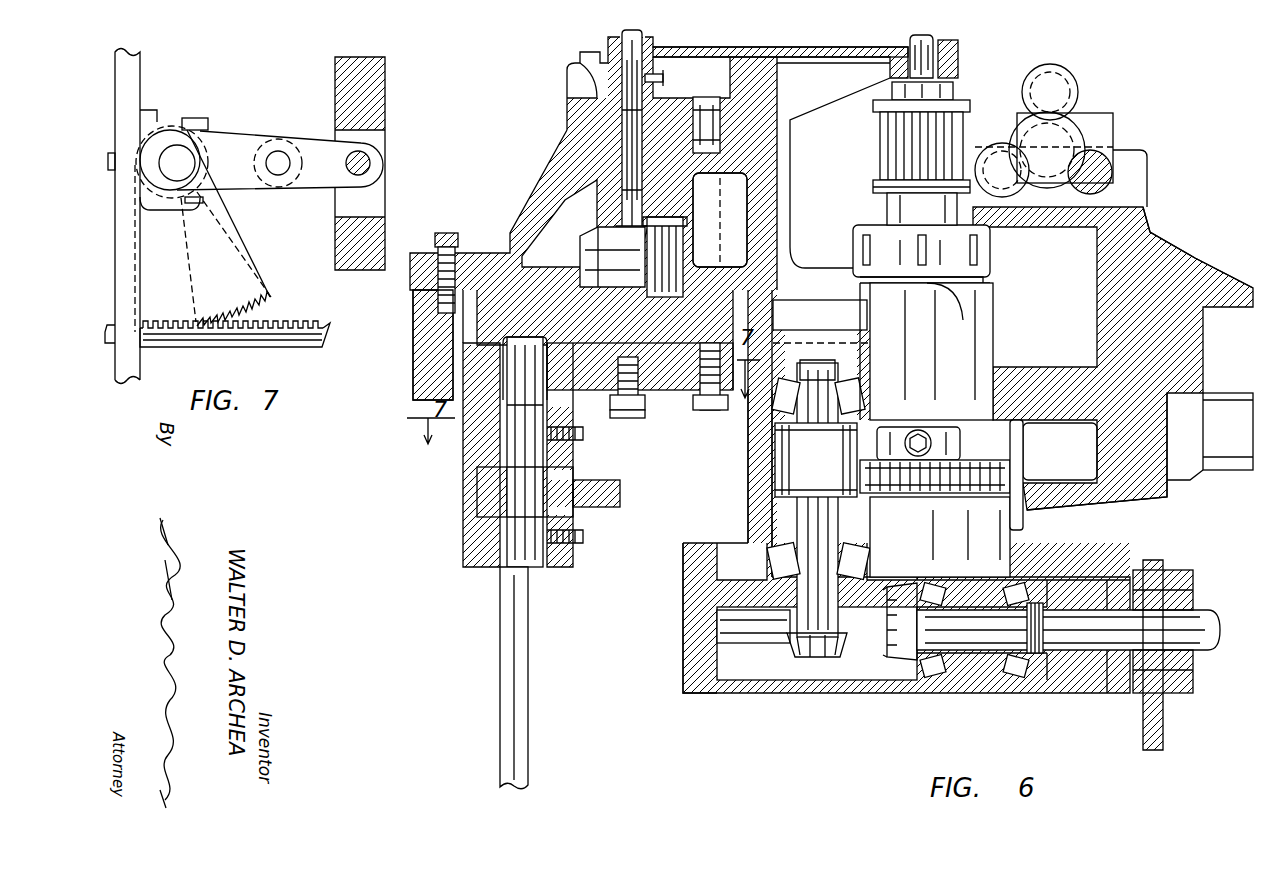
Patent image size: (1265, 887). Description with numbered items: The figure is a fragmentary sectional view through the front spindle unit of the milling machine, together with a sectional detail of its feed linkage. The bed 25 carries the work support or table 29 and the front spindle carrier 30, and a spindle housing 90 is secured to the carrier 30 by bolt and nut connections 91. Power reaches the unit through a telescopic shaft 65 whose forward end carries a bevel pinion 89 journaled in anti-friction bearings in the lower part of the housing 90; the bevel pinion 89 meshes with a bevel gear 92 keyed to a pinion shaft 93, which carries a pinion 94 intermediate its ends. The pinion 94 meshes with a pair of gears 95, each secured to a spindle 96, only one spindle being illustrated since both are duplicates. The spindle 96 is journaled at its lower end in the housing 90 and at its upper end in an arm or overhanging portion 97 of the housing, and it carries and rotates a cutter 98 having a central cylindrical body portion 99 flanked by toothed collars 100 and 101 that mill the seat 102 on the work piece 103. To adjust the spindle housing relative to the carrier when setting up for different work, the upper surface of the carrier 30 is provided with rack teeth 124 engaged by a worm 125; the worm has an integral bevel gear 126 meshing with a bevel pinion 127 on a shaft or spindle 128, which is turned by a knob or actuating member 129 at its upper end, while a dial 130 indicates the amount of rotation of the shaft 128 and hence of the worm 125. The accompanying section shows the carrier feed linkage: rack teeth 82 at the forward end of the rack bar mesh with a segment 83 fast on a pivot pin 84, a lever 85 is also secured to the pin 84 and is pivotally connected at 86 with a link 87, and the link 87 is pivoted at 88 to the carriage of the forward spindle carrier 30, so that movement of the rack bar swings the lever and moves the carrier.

In FIG. 6, the bed 25 is at (1140, 477).
In FIG. 6, the work support or table 29 is at (1137, 247).
In FIG. 6, the front spindle carrier 30 is at (425, 355).
In FIG. 6, the telescopic shaft 65 is at (1187, 627).
In FIG. 7, the rack teeth 82 is at (287, 321).
In FIG. 7, the segment 83 is at (262, 288).
In FIG. 6, the segment 83 is at (606, 492).
In FIG. 7, the pivot pin 84 is at (172, 150).
In FIG. 6, the pivot pin 84 is at (530, 573).
In FIG. 7, the lever 85 is at (270, 124).
In FIG. 6, the lever 85 is at (580, 397).
In FIG. 7, the pivotal connection 86 is at (282, 155).
In FIG. 6, the pivotal connection 86 is at (647, 397).
In FIG. 7, the link 87 is at (315, 145).
In FIG. 6, the link 87 is at (672, 390).
In FIG. 7, the pivot 88 is at (370, 165).
In FIG. 6, the pivot 88 is at (715, 408).
In FIG. 6, the bevel pinion 89 is at (905, 645).
In FIG. 6, the spindle housing 90 is at (747, 516).
In FIG. 6, the bolt and nut connections 91 is at (448, 235).
In FIG. 6, the bevel gear 92 is at (683, 578).
In FIG. 6, the pinion shaft 93 is at (813, 625).
In FIG. 6, the pinion 94 is at (847, 487).
In FIG. 6, the gears 95 is at (993, 477).
In FIG. 6, the spindle 96 is at (930, 35).
In FIG. 6, the arm or overhanging portion 97 is at (835, 47).
In FIG. 6, the cutter 98 is at (903, 133).
In FIG. 6, the central cylindrical body portion 99 is at (957, 138).
In FIG. 6, the collar 100 is at (960, 104).
In FIG. 6, the collar 101 is at (873, 183).
In FIG. 6, the seat 102 is at (1050, 108).
In FIG. 6, the work piece 103 is at (1088, 138).
In FIG. 6, the rack teeth 124 is at (583, 258).
In FIG. 6, the worm 125 is at (705, 226).
In FIG. 6, the bevel gear 126 is at (647, 252).
In FIG. 6, the bevel pinion 127 is at (612, 233).
In FIG. 6, the shaft or spindle 128 is at (666, 94).
In FIG. 6, the knob or actuating member 129 is at (648, 47).
In FIG. 6, the dial 130 is at (664, 78).